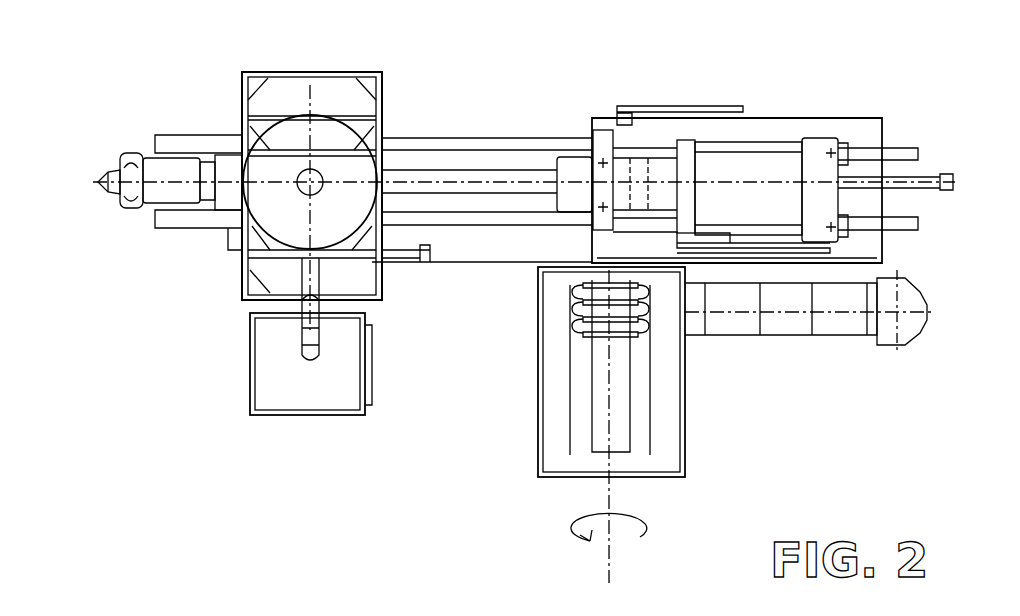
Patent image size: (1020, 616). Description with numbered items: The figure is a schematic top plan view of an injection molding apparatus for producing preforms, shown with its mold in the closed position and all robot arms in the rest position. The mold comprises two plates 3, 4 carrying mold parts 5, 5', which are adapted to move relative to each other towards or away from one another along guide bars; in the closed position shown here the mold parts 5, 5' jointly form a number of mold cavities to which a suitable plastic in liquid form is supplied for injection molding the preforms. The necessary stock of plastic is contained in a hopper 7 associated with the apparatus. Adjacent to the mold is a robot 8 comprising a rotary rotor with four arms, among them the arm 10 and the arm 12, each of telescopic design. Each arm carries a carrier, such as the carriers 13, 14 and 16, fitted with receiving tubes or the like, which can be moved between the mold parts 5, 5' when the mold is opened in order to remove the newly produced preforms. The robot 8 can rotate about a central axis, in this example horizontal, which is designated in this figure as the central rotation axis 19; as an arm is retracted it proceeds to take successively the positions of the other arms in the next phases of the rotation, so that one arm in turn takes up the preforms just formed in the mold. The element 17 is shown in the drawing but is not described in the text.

The plate 3 is at (690, 170).
The plate 4 is at (600, 150).
The mold part 5 is at (651, 126).
The mold part 5' is at (612, 120).
The hopper 7 is at (340, 142).
The robot 8 is at (620, 440).
The arm 10 is at (570, 405).
The arm 12 is at (650, 397).
The carrier 13 is at (592, 335).
The carrier 14 is at (570, 305).
The carrier 16 is at (655, 335).
The bolt 17 is at (737, 333).
The central rotation axis 19 is at (612, 553).